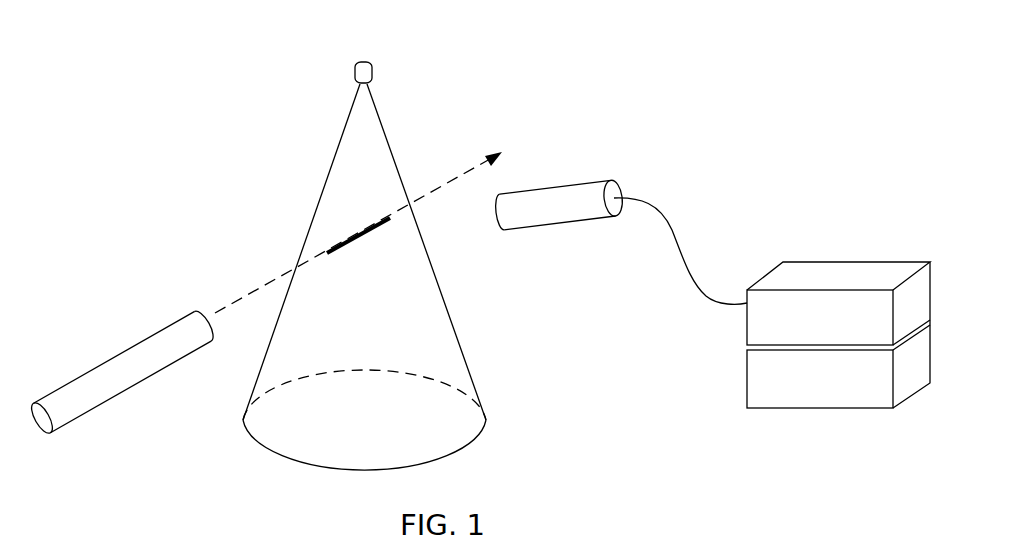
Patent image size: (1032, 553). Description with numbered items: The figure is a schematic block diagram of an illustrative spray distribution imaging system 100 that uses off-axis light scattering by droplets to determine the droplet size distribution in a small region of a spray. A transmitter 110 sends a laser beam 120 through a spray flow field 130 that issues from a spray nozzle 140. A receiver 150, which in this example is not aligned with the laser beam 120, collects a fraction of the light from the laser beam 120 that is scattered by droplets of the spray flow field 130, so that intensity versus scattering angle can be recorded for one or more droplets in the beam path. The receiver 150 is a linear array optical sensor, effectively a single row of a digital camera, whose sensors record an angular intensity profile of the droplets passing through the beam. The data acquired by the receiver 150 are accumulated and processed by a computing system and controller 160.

The spray distribution imaging system 100 is at (155, 134).
The transmitter 110 is at (117, 371).
The laser beam 120 is at (398, 220).
The spray flow field 130 is at (364, 277).
The spray nozzle 140 is at (363, 53).
The receiver 150 is at (620, 241).
The computing system and controller 160 is at (838, 352).